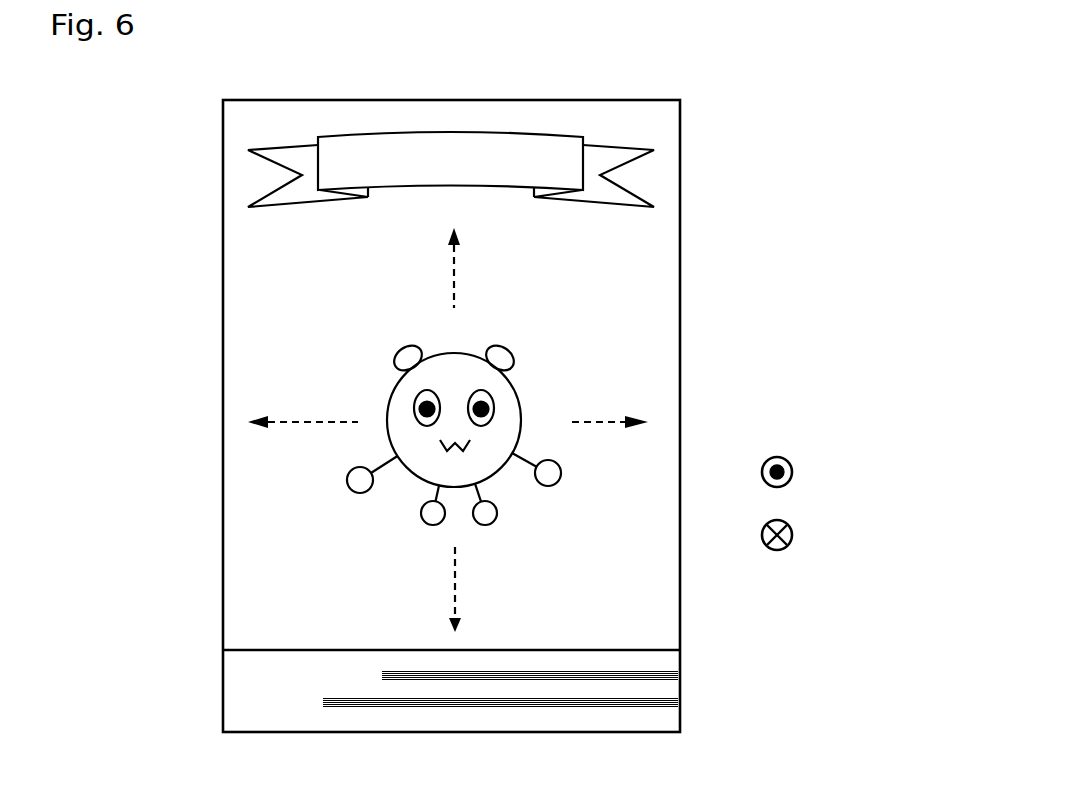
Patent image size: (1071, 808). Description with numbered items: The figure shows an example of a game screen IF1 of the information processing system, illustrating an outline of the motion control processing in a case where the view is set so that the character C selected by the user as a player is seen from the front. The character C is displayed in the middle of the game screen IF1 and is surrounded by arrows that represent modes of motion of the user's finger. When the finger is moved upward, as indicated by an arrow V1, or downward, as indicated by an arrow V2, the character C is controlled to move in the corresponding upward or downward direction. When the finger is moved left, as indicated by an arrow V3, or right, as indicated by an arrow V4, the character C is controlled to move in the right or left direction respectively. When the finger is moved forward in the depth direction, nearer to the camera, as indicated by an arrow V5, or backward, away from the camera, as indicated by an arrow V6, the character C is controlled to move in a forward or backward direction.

The game screen IF1 is at (716, 239).
The character C is at (318, 316).
The arrow V1 is at (458, 277).
The arrow V2 is at (460, 598).
The arrow V3 is at (312, 427).
The arrow V4 is at (607, 418).
The arrow V5 is at (792, 472).
The arrow V6 is at (792, 535).